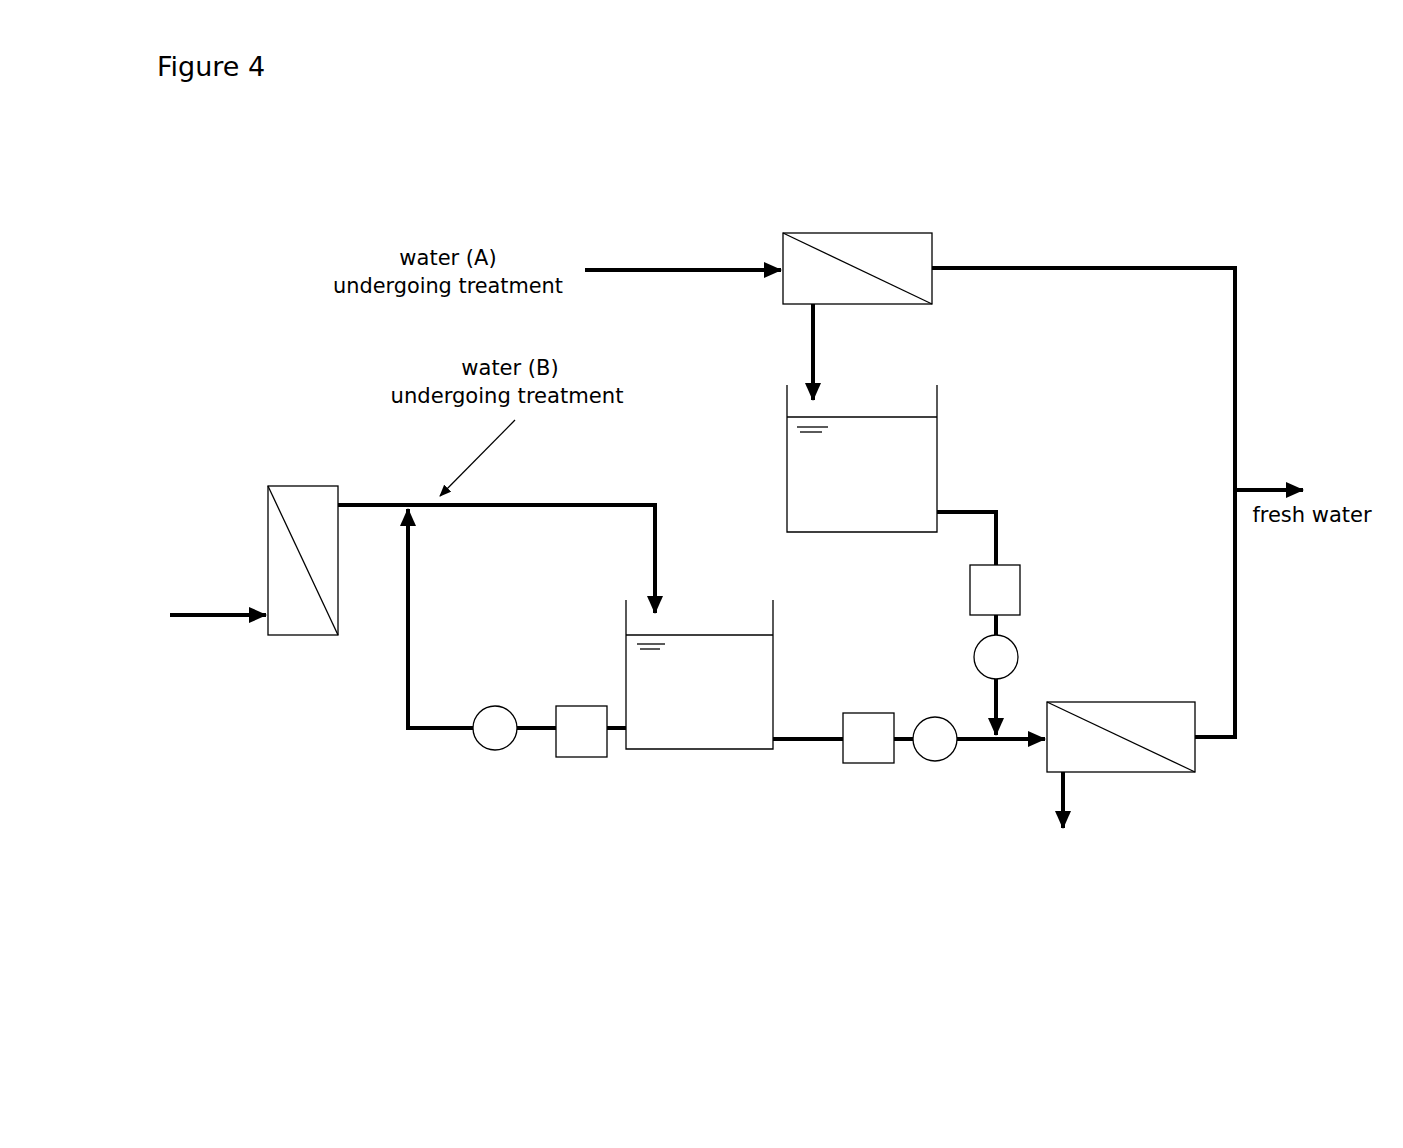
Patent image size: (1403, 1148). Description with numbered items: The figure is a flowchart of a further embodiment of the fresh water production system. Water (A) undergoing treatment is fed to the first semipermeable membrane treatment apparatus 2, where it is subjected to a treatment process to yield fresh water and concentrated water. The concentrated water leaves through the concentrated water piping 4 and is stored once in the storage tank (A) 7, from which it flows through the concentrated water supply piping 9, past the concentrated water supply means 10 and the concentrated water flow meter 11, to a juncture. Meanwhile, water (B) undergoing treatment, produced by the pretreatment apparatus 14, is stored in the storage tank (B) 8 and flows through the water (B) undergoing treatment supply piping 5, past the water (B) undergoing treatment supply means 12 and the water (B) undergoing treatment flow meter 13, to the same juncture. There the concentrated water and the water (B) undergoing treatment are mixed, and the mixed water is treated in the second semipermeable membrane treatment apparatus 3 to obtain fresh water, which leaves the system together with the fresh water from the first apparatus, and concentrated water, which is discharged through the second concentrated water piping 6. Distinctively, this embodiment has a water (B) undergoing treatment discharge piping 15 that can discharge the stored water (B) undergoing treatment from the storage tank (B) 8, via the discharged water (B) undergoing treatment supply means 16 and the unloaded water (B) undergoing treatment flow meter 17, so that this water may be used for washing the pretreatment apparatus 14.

The first semipermeable membrane treatment apparatus 2 is at (861, 225).
The second semipermeable membrane treatment apparatus 3 is at (1176, 786).
The concentrated water piping 4 is at (799, 352).
The water (B) undergoing treatment supply piping 5 is at (802, 751).
The second concentrated water piping 6 is at (1054, 795).
The storage tank (A) 7 is at (941, 424).
The storage tank (B) 8 is at (662, 758).
The concentrated water supply piping 9 is at (1004, 542).
The concentrated water supply means 10 is at (1029, 587).
The concentrated water flow meter 11 is at (1026, 655).
The water (B) undergoing treatment supply means 12 is at (863, 769).
The water (B) undergoing treatment flow meter 13 is at (944, 769).
The pretreatment apparatus 14 is at (268, 659).
The water (B) undergoing treatment discharge piping 15 is at (397, 706).
The discharged water (B) undergoing treatment supply means 16 is at (557, 761).
The unloaded water (B) undergoing treatment flow meter 17 is at (477, 751).